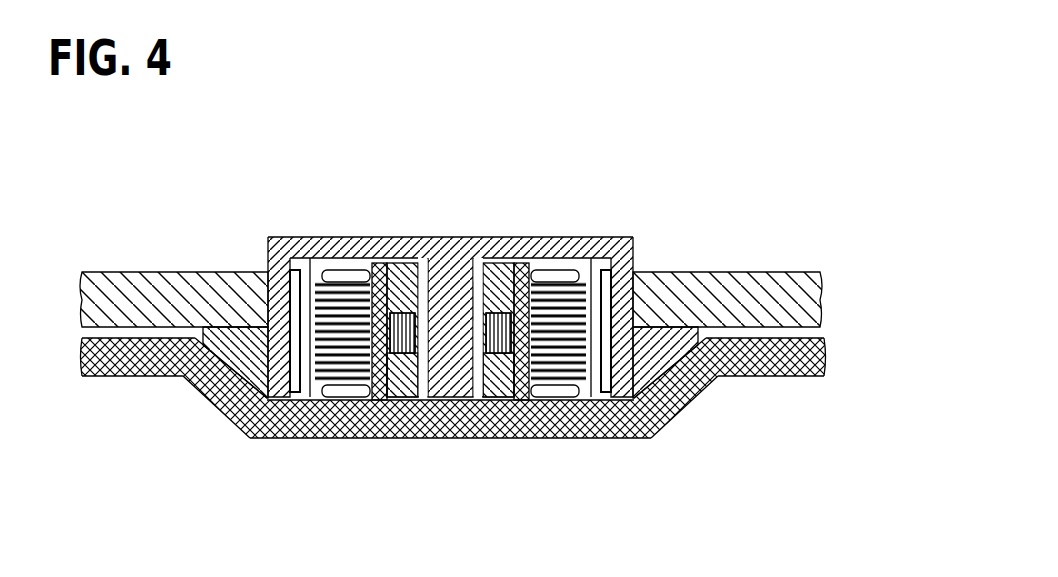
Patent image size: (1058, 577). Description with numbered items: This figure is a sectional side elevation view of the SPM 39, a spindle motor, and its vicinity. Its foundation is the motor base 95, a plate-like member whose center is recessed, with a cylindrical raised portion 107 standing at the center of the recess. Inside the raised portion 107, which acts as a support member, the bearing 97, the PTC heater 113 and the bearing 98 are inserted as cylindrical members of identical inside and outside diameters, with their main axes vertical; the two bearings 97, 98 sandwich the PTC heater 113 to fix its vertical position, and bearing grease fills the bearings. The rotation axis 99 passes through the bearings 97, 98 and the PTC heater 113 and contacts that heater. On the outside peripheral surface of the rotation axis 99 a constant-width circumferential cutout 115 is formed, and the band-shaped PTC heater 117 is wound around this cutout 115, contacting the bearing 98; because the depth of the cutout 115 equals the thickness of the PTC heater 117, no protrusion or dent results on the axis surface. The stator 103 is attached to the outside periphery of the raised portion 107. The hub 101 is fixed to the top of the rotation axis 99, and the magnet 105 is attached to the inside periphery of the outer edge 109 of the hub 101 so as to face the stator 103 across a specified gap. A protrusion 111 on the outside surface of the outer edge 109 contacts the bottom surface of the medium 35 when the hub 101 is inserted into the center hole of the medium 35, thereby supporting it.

The medium 35 is at (110, 287).
The SPM 39 is at (327, 237).
The motor base 95 is at (632, 425).
The bearing 97 is at (400, 397).
The bearing 98 is at (403, 278).
The rotation axis 99 is at (450, 300).
The hub 101 is at (580, 237).
The stator 103 is at (327, 298).
The magnet 105 is at (292, 266).
The raised portion 107 is at (378, 375).
The outer edge 109 is at (257, 357).
The protrusion 111 is at (218, 383).
The PTC heater 113 is at (490, 347).
The cutout 115 is at (427, 268).
The PTC heater 117 is at (424, 283).